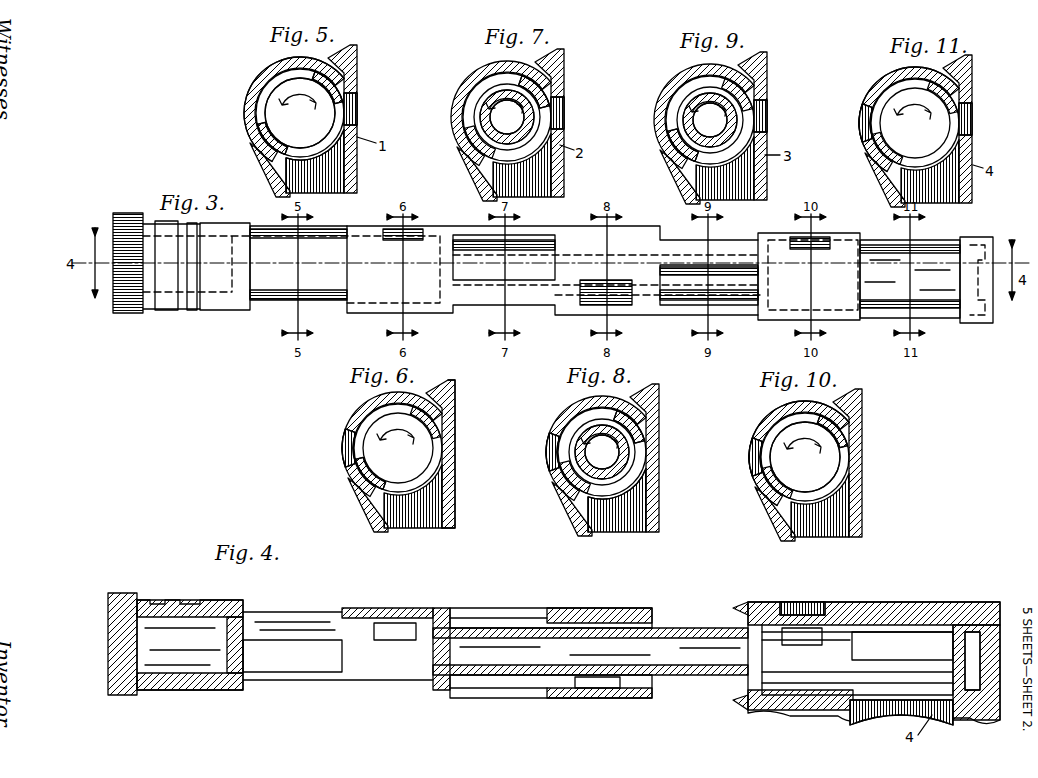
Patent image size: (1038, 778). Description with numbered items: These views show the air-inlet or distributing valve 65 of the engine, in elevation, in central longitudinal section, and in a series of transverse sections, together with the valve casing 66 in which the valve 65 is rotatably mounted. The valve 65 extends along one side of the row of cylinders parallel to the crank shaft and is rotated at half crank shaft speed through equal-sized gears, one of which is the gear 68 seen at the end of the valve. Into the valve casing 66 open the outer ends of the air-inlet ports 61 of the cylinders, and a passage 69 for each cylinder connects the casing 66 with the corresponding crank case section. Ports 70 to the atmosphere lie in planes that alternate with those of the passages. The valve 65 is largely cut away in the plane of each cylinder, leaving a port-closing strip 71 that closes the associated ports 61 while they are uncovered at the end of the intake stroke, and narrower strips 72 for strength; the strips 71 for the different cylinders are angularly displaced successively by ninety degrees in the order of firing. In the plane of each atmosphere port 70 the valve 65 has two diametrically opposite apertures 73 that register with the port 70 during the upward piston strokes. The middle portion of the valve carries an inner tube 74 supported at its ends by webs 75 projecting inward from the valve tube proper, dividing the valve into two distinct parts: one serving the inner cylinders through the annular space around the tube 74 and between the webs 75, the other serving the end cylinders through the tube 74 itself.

In FIG. 5, the air-inlet ports 61 is at (372, 109).
In FIG. 7, the air-inlet ports 61 is at (575, 113).
In FIG. 9, the air-inlet ports 61 is at (773, 116).
In FIG. 11, the air-inlet ports 61 is at (979, 119).
In FIG. 4, the air-inlet ports 61 is at (862, 712).
In FIG. 5, the air-inlet or distributing valve 65 is at (300, 113).
In FIG. 10, the air-inlet or distributing valve 65 is at (805, 457).
In FIG. 3, the air-inlet or distributing valve 65 is at (222, 302).
In FIG. 4, the air-inlet or distributing valve 65 is at (238, 606).
In FIG. 5, the valve casing 66 is at (287, 108).
In FIG. 11, the valve casing 66 is at (901, 119).
In FIG. 6, the valve casing 66 is at (466, 454).
In FIG. 10, the valve casing 66 is at (790, 453).
In FIG. 4, the valve casing 66 is at (937, 602).
In FIG. 3, the gear 68 is at (121, 313).
In FIG. 4, the gear 68 is at (118, 600).
In FIG. 5, the passage 69 is at (333, 162).
In FIG. 8, the passage 69 is at (604, 512).
In FIG. 6, the atmosphere ports 70 is at (330, 448).
In FIG. 10, the atmosphere ports 70 is at (740, 457).
In FIG. 4, the atmosphere ports 70 is at (798, 608).
In FIG. 5, the port-closing strip 71 is at (347, 88).
In FIG. 7, the port-closing strip 71 is at (492, 86).
In FIG. 9, the port-closing strip 71 is at (677, 160).
In FIG. 11, the port-closing strip 71 is at (852, 123).
In FIG. 4, the port-closing strip 71 is at (902, 632).
In FIG. 5, the strips 72 is at (265, 148).
In FIG. 4, the strips 72 is at (297, 633).
In FIG. 6, the apertures 73 is at (359, 485).
In FIG. 8, the apertures 73 is at (655, 440).
In FIG. 10, the apertures 73 is at (850, 427).
In FIG. 3, the apertures 73 is at (410, 232).
In FIG. 4, the apertures 73 is at (398, 625).
In FIG. 7, the inner tube 74 is at (535, 109).
In FIG. 9, the inner tube 74 is at (680, 123).
In FIG. 8, the inner tube 74 is at (572, 447).
In FIG. 3, the inner tube 74 is at (683, 283).
In FIG. 4, the inner tube 74 is at (520, 642).
In FIG. 4, the webs 75 is at (447, 618).